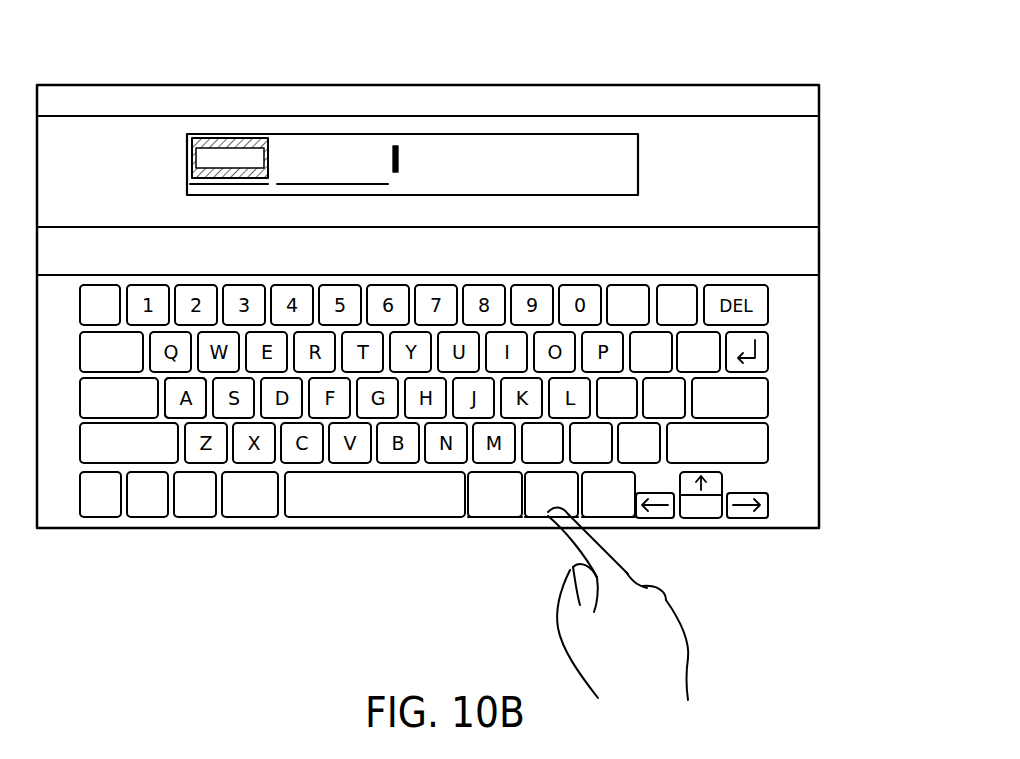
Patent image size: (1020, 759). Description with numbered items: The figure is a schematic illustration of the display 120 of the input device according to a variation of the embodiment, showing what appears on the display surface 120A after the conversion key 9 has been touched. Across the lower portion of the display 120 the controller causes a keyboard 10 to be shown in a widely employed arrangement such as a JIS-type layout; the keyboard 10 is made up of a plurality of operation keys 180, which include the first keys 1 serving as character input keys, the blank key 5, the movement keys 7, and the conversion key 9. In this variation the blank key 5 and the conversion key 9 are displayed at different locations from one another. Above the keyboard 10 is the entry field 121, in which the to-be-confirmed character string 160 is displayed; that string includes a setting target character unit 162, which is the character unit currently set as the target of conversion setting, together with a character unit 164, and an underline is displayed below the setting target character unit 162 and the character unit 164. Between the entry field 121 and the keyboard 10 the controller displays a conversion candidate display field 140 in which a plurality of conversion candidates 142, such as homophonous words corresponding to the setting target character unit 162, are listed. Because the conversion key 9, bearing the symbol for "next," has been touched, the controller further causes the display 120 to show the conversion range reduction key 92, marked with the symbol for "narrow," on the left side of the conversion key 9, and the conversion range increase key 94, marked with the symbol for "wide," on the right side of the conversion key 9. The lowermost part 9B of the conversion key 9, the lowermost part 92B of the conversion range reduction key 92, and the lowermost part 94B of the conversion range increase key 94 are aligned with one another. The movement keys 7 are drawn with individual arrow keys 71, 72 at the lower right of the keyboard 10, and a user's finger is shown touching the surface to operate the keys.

The keyboard 10 is at (819, 343).
The display 120 is at (80, 85).
The display surface 120A is at (147, 140).
The entry field 121 is at (188, 160).
The conversion candidate display field 140 is at (469, 217).
The conversion candidates 142 is at (80, 234).
The to-be-confirmed character string 160 is at (412, 101).
The setting target character unit 162 is at (252, 130).
The character unit 164 is at (320, 130).
The first key 1 is at (173, 397).
The blank key 5 is at (438, 505).
The movement keys 7 is at (716, 568).
The left cursor key 71 is at (663, 520).
The right cursor key 72 is at (747, 520).
The conversion key 9 is at (535, 505).
The lowermost part of the conversion key 9B is at (543, 520).
The conversion range reduction key 92 is at (478, 505).
The lowermost part of the conversion range reduction key 92B is at (495, 520).
The conversion range increase key 94 is at (622, 478).
The lowermost part of the conversion range increase key 94B is at (615, 521).
The operation keys 180 is at (228, 563).